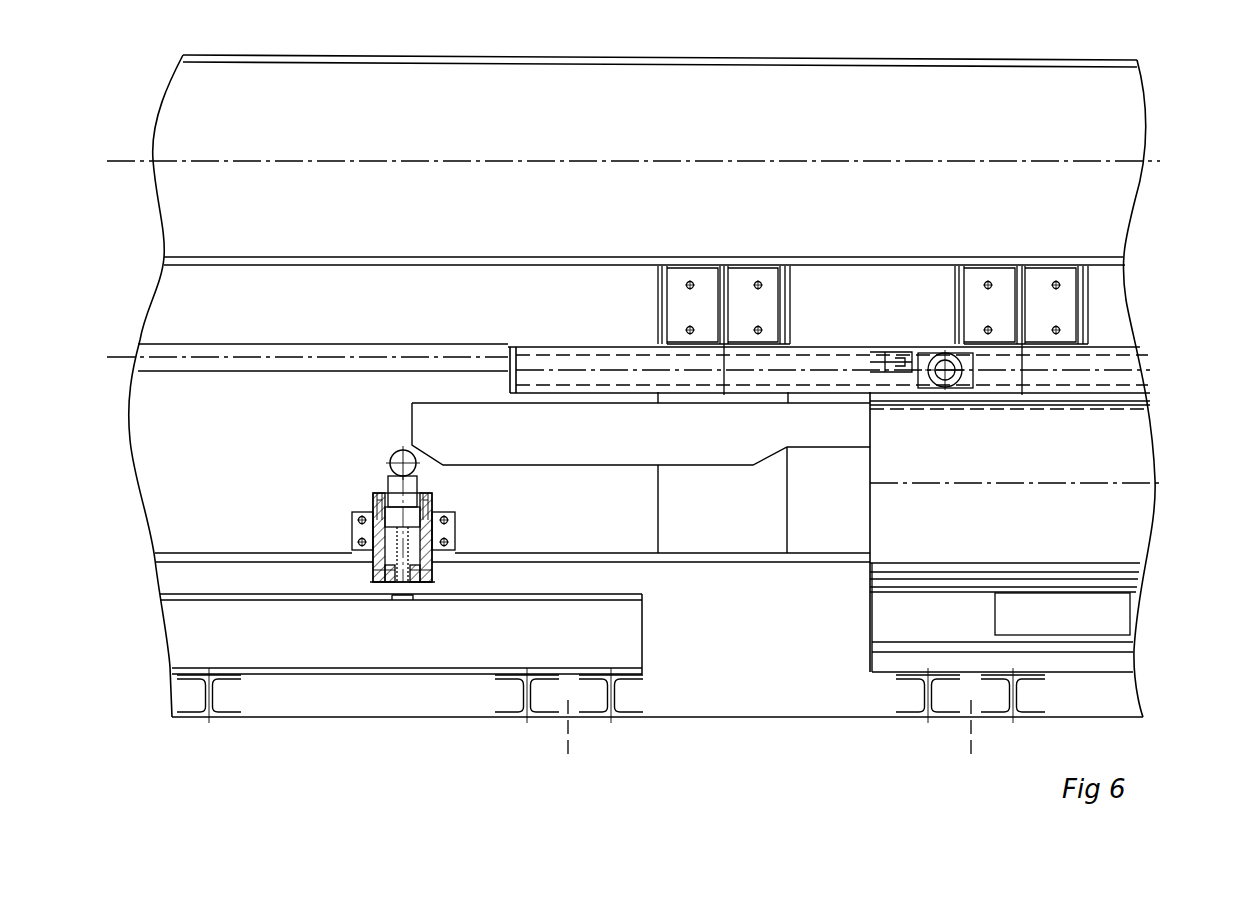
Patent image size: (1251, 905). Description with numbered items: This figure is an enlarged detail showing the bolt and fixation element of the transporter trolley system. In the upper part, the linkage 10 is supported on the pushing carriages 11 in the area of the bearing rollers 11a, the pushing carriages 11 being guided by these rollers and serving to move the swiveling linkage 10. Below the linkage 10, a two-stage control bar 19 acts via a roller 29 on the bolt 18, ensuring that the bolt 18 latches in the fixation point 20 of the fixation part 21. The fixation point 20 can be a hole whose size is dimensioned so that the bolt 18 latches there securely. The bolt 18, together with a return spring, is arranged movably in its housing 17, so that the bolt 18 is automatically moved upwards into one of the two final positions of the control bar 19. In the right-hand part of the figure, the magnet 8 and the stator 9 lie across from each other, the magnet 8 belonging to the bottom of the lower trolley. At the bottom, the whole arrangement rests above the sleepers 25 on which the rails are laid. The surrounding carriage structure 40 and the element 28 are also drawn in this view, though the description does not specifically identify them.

The carriage body 40 is at (662, 98).
The linkage 10 is at (330, 357).
The bearing rollers 11a is at (940, 358).
The pushing carriages 11 is at (1117, 507).
The two-stage control bar 19 is at (636, 446).
The housing 17 is at (432, 535).
The roller 29 is at (393, 455).
The fixation point 20 is at (403, 583).
The cylinder base 28 is at (374, 583).
The bolt 18 is at (432, 583).
The fixation part 21 is at (282, 645).
The magnet 8 is at (872, 580).
The stator 9 is at (885, 618).
The sleepers 25 is at (503, 718).